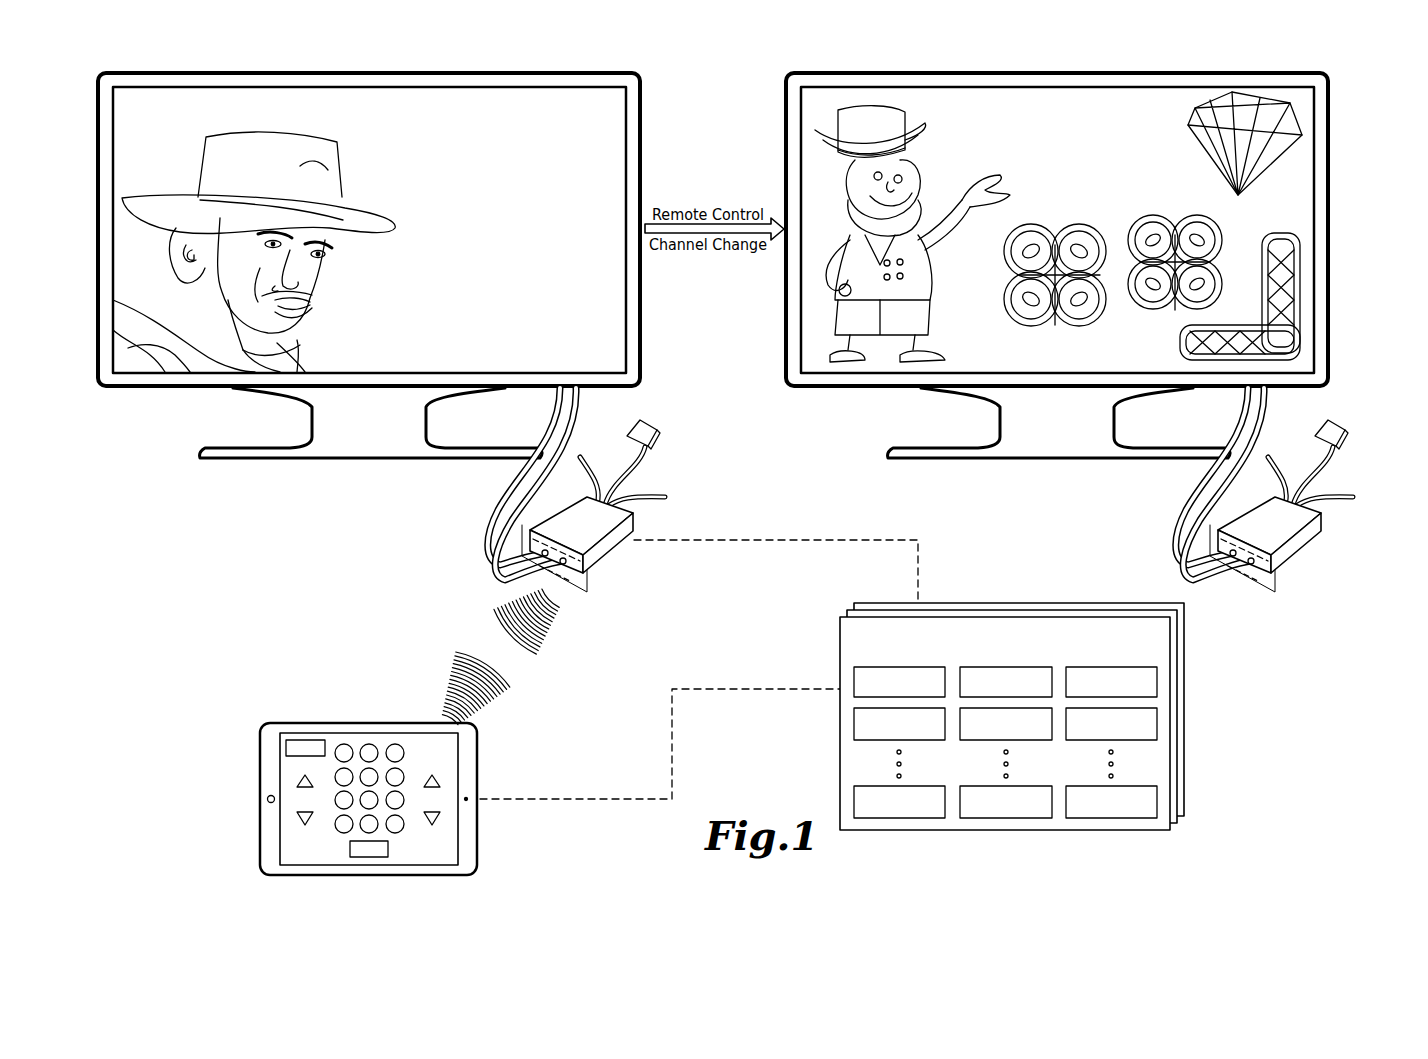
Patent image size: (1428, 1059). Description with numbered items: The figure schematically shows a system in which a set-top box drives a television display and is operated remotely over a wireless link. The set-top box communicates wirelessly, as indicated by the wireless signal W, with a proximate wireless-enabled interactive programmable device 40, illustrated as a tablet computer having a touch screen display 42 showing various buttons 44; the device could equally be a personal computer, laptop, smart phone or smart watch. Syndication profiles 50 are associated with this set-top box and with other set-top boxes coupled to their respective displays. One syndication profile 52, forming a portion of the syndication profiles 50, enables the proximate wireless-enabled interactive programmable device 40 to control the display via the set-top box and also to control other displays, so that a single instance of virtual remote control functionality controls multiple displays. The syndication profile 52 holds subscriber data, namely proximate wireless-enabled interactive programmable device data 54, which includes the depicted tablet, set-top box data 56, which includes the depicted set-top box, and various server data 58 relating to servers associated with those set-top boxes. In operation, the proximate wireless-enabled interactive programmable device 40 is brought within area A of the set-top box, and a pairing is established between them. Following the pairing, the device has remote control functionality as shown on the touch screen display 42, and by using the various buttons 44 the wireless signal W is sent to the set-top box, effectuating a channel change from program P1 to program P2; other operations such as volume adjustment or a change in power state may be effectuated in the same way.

The proximate wireless-enabled interactive programmable device 40 is at (355, 799).
The touch screen display 42 is at (443, 843).
The buttons 44 is at (441, 782).
The syndication profiles 50 is at (1012, 678).
The syndication profile 52 is at (880, 616).
The proximate wireless-enabled interactive programmable device data 54 is at (898, 664).
The set-top box data 56 is at (1006, 664).
The server data 58 is at (1116, 664).
The program P1 is at (138, 378).
The program P2 is at (826, 378).
The area A is at (549, 622).
The wireless signal W is at (455, 669).